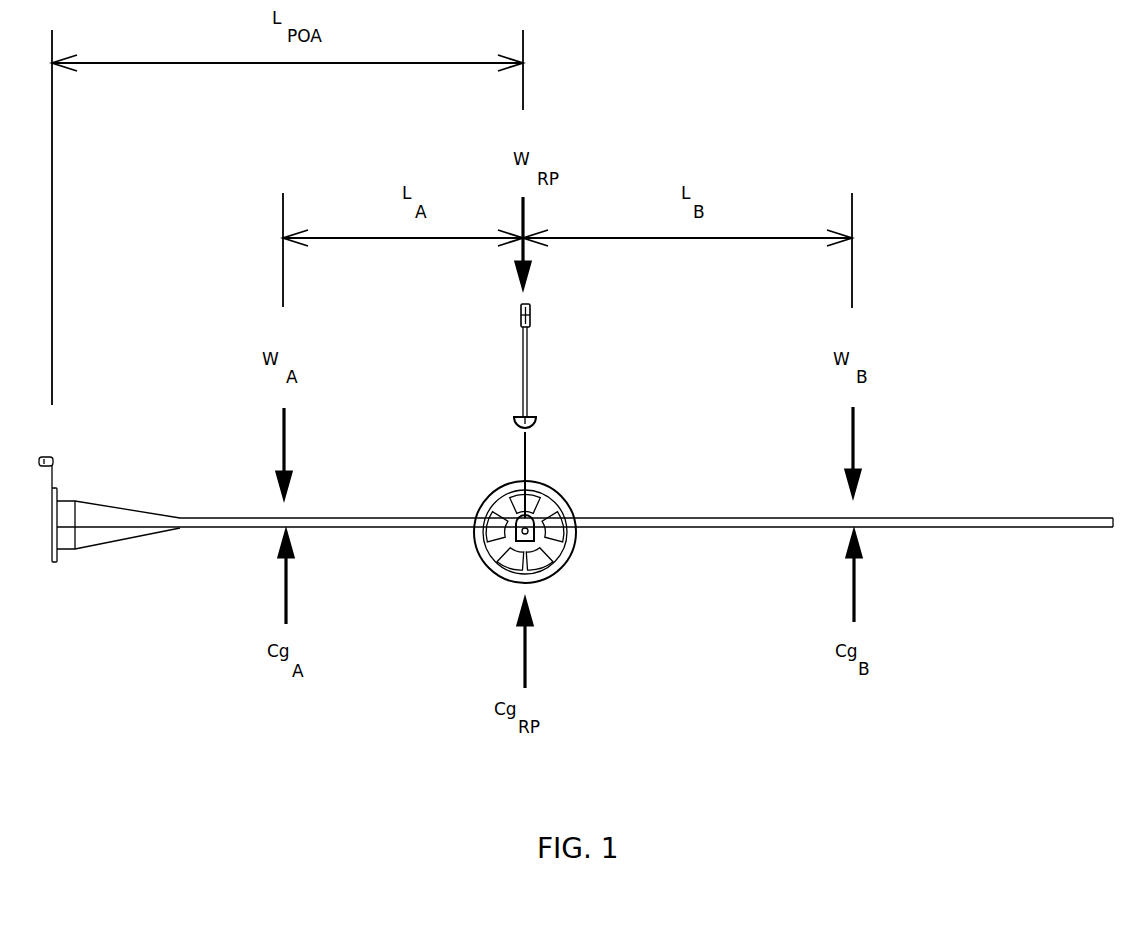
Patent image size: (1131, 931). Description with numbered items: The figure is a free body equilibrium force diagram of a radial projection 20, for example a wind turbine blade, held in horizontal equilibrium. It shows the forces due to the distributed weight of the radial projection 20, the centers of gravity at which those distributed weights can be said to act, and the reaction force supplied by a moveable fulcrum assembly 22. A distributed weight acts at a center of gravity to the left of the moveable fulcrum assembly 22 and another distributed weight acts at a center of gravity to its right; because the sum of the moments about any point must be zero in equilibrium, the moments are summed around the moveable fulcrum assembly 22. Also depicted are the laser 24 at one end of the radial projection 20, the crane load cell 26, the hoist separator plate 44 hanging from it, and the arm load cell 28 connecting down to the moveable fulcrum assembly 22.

The radial projection 20 is at (948, 520).
The moveable fulcrum assembly 22 is at (578, 587).
The laser 24 is at (51, 452).
The crane load cell 26 is at (530, 310).
The arm load cell 28 is at (530, 456).
The hoist separator plate 44 is at (527, 373).